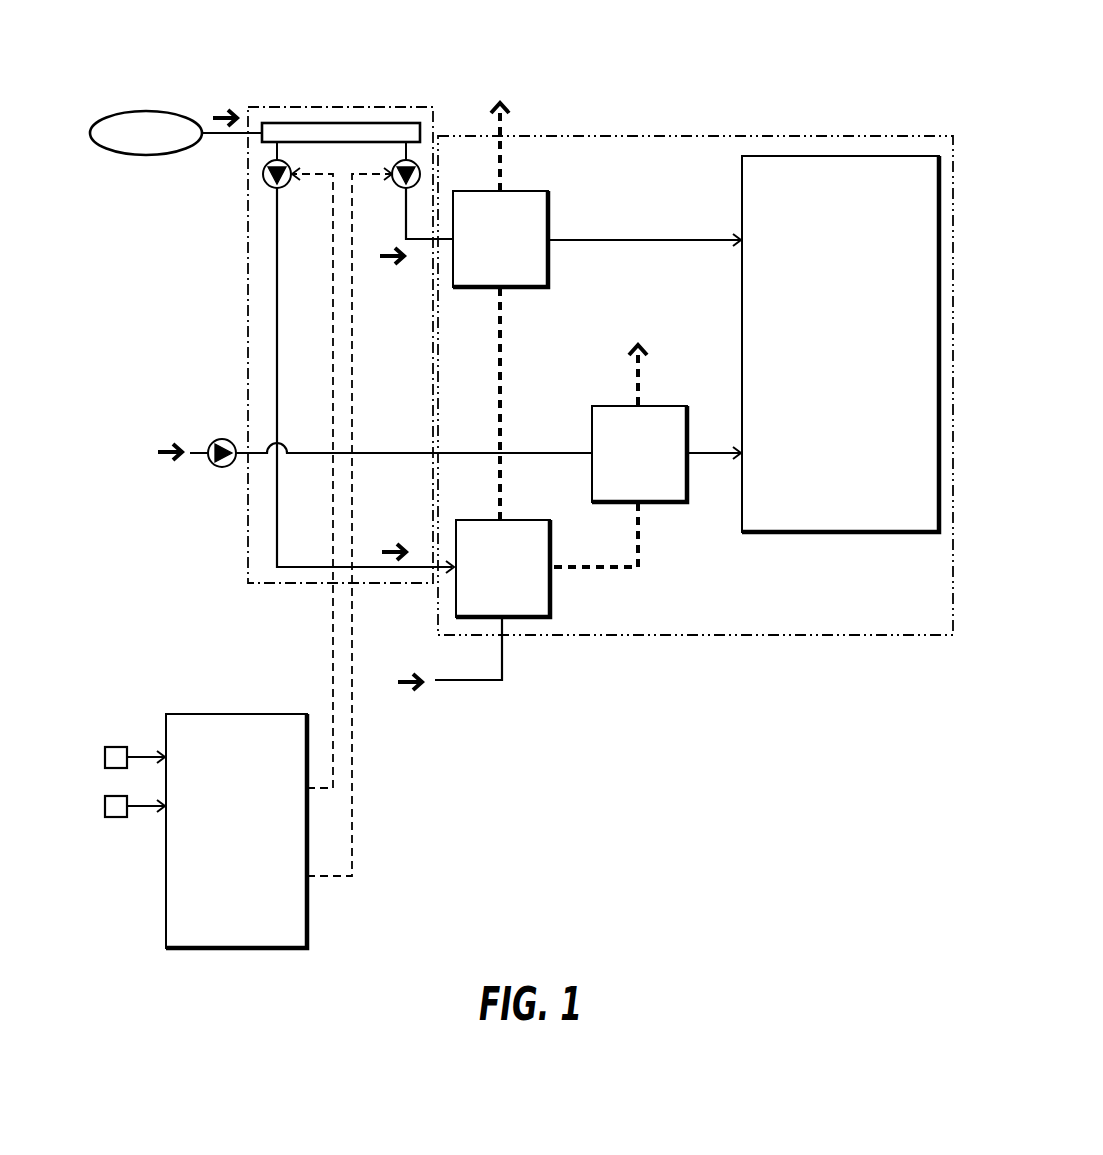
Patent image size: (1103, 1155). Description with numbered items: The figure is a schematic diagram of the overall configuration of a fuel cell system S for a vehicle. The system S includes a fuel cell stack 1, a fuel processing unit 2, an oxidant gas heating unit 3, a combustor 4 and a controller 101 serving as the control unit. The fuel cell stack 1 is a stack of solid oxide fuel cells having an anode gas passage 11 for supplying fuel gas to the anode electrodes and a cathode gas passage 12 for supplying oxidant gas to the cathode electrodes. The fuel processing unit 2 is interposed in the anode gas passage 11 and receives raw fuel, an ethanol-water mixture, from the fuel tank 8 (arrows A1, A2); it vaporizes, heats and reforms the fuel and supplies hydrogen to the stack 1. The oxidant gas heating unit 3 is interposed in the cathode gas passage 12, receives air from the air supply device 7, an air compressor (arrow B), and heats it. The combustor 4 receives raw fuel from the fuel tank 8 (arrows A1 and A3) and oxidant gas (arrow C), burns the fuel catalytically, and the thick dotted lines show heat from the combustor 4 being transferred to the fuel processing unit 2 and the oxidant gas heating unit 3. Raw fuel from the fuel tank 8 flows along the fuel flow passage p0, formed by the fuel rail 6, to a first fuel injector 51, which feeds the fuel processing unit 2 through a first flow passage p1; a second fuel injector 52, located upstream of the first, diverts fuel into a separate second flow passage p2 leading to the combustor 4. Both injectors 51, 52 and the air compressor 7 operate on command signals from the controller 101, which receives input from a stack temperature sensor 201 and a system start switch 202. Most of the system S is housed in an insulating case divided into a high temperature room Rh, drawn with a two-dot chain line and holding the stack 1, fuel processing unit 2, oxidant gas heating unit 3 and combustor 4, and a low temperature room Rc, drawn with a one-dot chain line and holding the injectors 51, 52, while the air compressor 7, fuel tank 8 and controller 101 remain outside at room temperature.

The fuel cell stack 1 is at (898, 156).
The fuel processing unit 2 is at (527, 288).
The oxidant gas heating unit 3 is at (622, 405).
The combustor 4 is at (524, 618).
The fuel rail 6 is at (380, 122).
The air supply device 7 is at (222, 438).
The fuel tank 8 is at (140, 110).
The anode gas passage 11 is at (618, 238).
The cathode gas passage 12 is at (550, 452).
The first fuel injector 51 is at (396, 188).
The second fuel injector 52 is at (286, 188).
The controller 101 is at (206, 713).
The stack temperature sensor 201 is at (105, 757).
The system start switch 202 is at (105, 806).
The fuel cell system S is at (762, 92).
The low temperature room Rc is at (275, 107).
The high temperature room Rh is at (590, 136).
The raw fuel supply flow A1 is at (223, 104).
The raw fuel flow to fuel processing unit A2 is at (415, 241).
The raw fuel flow to combustor A3 is at (365, 380).
The oxidant gas supply flow B is at (169, 438).
The oxidant gas supply to combustor C is at (450, 653).
The fuel flow passage p0 is at (240, 140).
The first flow passage p1 is at (428, 243).
The second flow passage p2 is at (317, 570).